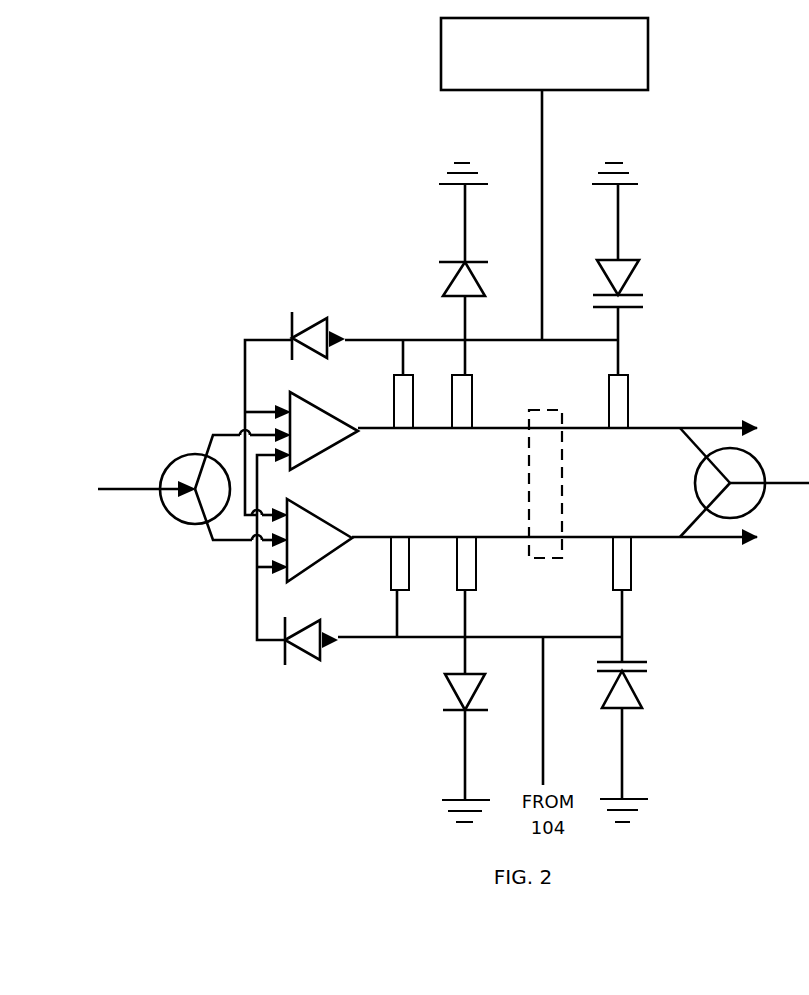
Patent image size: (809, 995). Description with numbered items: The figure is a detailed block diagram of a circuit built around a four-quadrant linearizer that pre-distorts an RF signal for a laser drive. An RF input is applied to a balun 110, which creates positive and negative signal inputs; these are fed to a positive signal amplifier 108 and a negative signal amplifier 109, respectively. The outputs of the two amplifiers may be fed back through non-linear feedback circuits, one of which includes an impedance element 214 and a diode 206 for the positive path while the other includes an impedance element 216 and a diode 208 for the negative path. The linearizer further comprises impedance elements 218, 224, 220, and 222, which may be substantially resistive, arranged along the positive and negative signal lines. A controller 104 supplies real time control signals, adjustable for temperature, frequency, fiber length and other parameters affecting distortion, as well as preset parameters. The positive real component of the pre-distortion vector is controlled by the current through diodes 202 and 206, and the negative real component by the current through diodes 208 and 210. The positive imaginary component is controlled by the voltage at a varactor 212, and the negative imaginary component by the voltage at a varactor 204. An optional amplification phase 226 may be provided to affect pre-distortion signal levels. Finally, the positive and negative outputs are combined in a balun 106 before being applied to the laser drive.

The controller 104 is at (544, 54).
The balun 106 is at (721, 519).
The positive signal amplifier 108 is at (324, 431).
The negative signal amplifier 109 is at (319, 540).
The balun 110 is at (189, 523).
The diode 202 is at (450, 258).
The varactor 204 is at (641, 691).
The diode 206 is at (320, 316).
The diode 208 is at (322, 664).
The diode 210 is at (448, 712).
The varactor 212 is at (638, 254).
The impedance element 214 is at (397, 433).
The impedance element 216 is at (390, 534).
The impedance element 218 is at (462, 434).
The impedance element 220 is at (476, 566).
The impedance element 222 is at (632, 583).
The impedance element 224 is at (629, 378).
The amplification phase 226 is at (539, 410).